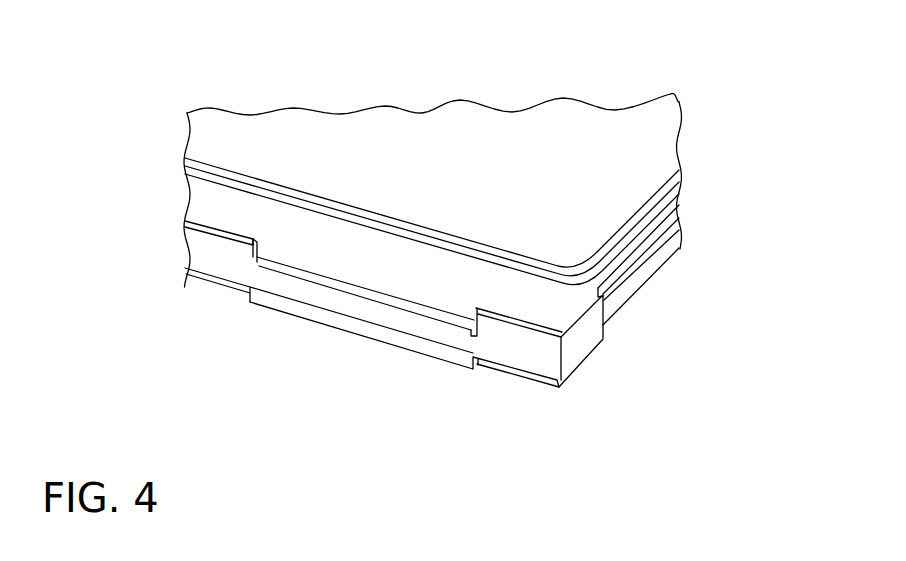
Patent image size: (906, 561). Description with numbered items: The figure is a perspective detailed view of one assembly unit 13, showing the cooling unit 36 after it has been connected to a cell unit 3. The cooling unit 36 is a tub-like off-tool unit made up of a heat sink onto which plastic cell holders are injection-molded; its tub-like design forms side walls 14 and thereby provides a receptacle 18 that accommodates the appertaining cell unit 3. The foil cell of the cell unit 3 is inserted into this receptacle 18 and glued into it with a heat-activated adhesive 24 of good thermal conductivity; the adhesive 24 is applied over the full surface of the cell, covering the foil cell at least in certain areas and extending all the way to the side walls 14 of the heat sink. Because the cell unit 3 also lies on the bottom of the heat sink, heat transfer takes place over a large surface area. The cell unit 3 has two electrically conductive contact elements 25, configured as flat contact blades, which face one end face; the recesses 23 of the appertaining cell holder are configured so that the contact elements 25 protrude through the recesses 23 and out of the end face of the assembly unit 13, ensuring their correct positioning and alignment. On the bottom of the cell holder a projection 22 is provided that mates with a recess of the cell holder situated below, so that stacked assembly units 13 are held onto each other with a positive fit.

The cell unit 3 is at (643, 147).
The assembly unit 13 is at (162, 223).
The side walls 14 is at (633, 279).
The receptacle 18 is at (651, 226).
The projection 22 is at (537, 378).
The recesses 23 is at (254, 258).
The adhesive 24 is at (258, 234).
The contact elements 25 is at (423, 328).
The cooling unit 36 is at (620, 338).